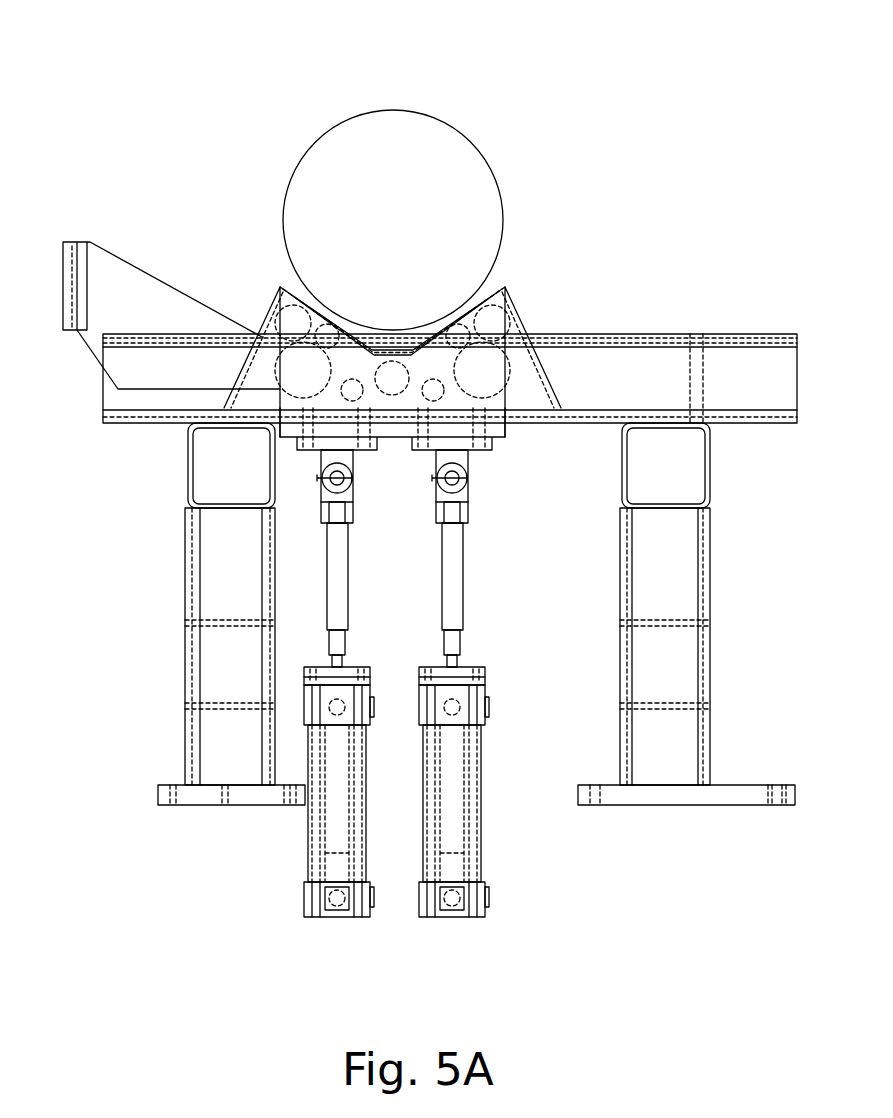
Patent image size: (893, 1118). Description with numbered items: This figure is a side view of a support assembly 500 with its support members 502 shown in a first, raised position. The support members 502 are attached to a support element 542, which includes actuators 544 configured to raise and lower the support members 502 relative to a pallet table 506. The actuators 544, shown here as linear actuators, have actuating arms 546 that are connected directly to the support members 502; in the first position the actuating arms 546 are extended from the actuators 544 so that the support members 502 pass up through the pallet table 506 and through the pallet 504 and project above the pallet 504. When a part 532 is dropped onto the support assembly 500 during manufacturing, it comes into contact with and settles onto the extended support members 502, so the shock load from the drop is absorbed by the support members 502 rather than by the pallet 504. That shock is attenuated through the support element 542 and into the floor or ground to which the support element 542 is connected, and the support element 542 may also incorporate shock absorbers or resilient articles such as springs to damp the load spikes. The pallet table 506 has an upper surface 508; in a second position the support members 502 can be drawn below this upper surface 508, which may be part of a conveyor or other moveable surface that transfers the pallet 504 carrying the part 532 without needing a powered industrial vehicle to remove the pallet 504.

The support assembly 500 is at (165, 137).
The support members 502 is at (293, 288).
The pallet 504 is at (520, 312).
The pallet table 506 is at (657, 411).
The upper surface 508 is at (605, 410).
The part 532 is at (422, 115).
The support element 542 is at (308, 833).
The actuators 544 is at (365, 833).
The actuating arms 546 is at (348, 590).